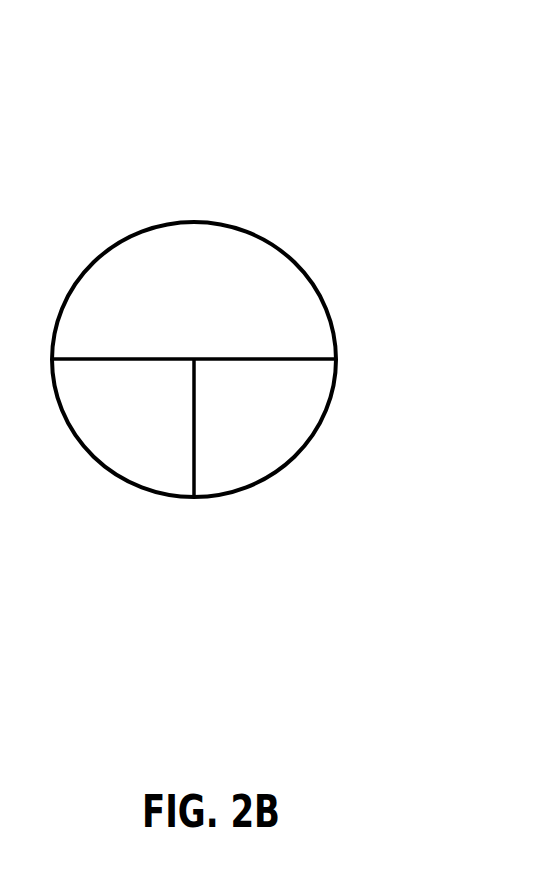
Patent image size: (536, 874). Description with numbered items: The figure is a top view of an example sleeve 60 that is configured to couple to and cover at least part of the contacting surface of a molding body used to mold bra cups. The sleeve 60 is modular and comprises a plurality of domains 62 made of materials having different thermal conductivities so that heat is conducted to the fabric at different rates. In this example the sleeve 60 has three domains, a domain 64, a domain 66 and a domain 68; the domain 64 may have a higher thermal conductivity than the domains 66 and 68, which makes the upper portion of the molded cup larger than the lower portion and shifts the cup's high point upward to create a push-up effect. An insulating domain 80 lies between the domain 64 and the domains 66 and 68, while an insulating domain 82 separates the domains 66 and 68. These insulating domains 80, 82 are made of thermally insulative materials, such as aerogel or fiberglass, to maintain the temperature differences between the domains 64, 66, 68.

The sleeve 60 is at (138, 125).
The plurality of domains 62 is at (90, 222).
The domain 64 is at (171, 315).
The domain 66 is at (234, 429).
The domain 68 is at (111, 429).
The insulating domain 80 is at (338, 358).
The insulating domain 82 is at (195, 498).